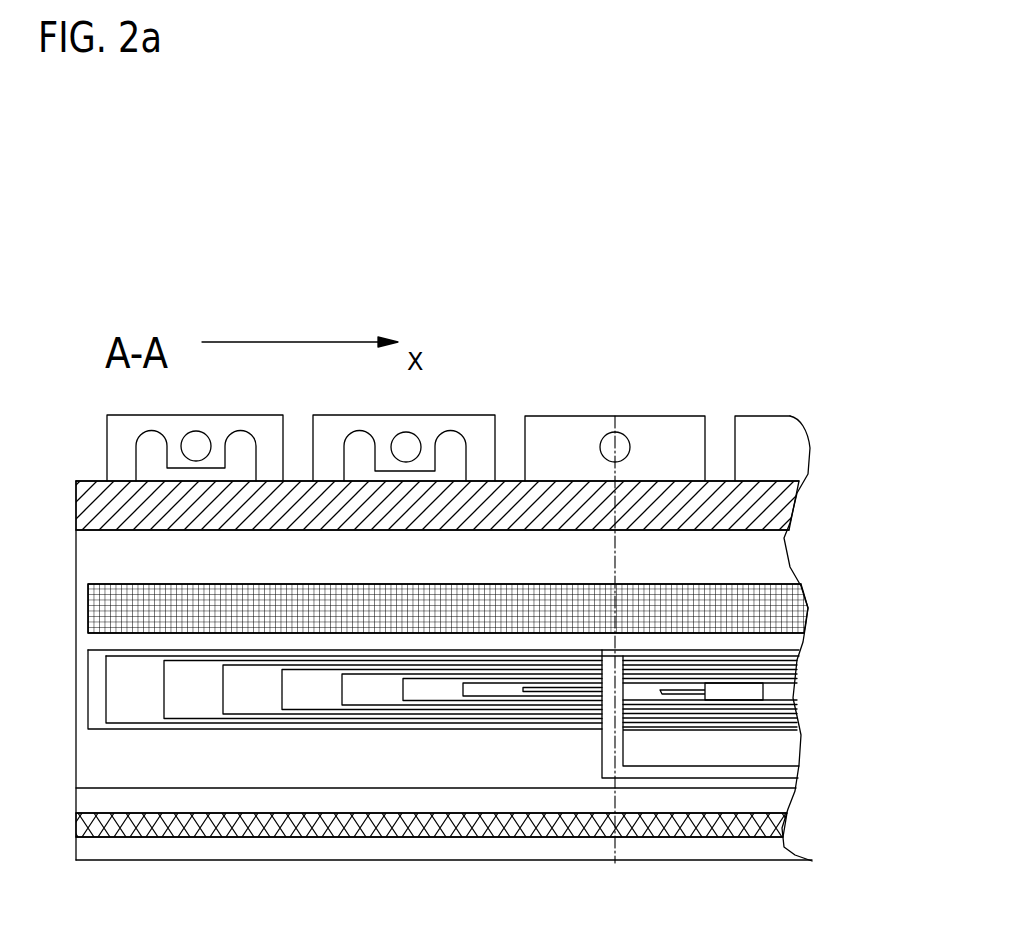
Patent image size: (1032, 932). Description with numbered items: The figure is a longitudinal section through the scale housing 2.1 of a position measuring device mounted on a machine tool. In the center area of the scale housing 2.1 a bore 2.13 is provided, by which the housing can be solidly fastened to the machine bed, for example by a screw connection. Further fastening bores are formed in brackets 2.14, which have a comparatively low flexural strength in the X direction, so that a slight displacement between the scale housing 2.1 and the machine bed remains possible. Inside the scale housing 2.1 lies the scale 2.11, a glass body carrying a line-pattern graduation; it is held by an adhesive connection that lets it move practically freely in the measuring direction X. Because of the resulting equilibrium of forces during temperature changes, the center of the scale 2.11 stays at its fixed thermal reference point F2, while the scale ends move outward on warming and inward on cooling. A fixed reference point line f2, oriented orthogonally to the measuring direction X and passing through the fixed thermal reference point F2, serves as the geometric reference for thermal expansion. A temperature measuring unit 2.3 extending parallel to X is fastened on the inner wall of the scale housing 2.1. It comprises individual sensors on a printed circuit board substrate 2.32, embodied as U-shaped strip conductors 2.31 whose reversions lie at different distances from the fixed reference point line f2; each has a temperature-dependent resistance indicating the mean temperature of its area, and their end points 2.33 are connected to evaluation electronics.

The scale housing 2.1 is at (784, 500).
The scale 2.11 is at (809, 603).
The bore 2.13 is at (624, 437).
The brackets 2.14 is at (455, 424).
The temperature measuring unit 2.3 is at (480, 787).
The U-shaped strip conductors 2.31 is at (280, 698).
The printed circuit board substrate 2.32 is at (93, 713).
The end points 2.33 is at (598, 732).
The fixed thermal reference point F2 is at (612, 607).
The fixed reference point line f2 is at (615, 853).